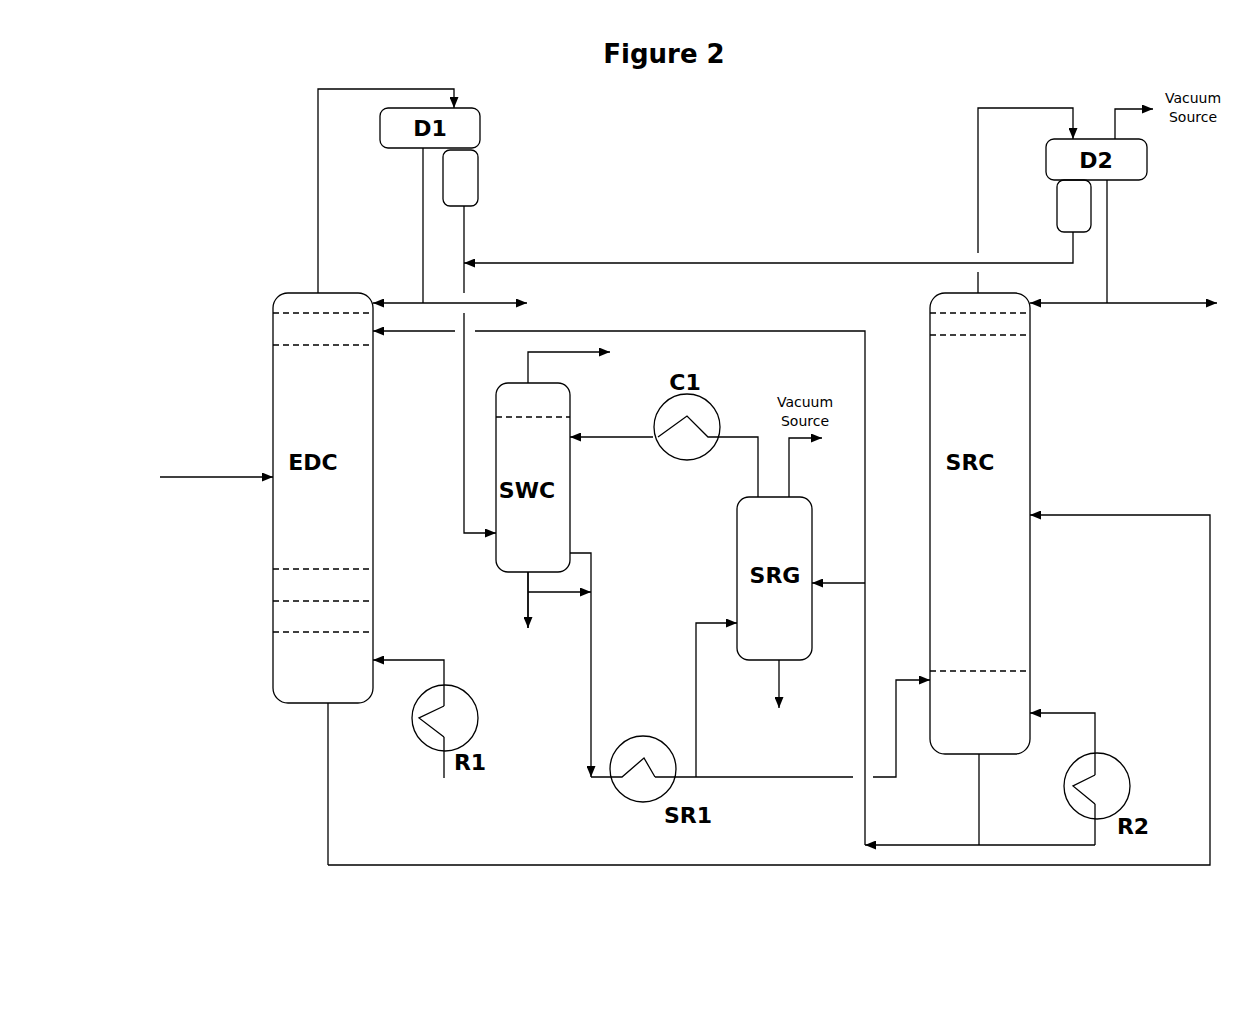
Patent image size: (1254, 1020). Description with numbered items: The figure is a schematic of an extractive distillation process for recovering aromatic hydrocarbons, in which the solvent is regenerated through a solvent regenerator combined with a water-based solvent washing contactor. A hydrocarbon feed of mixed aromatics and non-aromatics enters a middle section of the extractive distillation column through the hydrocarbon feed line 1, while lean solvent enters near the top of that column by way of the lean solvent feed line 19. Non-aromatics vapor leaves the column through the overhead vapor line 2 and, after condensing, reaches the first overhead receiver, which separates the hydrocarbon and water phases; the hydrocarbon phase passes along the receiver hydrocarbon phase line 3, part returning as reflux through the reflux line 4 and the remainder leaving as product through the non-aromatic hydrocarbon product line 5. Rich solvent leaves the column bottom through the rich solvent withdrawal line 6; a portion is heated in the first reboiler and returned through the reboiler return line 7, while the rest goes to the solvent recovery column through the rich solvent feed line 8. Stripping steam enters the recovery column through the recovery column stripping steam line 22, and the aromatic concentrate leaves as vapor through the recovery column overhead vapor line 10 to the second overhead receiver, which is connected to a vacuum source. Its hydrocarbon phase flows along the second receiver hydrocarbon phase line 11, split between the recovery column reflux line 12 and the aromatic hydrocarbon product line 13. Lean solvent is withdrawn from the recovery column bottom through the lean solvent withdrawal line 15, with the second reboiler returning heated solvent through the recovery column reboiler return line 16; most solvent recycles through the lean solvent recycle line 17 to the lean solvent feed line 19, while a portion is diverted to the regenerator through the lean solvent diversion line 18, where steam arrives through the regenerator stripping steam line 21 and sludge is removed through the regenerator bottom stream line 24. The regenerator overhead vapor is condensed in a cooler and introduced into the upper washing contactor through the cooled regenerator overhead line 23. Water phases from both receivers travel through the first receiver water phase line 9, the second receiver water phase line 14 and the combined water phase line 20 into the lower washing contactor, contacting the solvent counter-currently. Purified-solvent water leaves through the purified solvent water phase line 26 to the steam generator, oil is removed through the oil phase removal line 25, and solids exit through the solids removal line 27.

The hydrocarbon feed line 1 is at (216, 466).
The EDC overhead vapor line 2 is at (377, 191).
The D1 hydrocarbon phase line 3 is at (414, 225).
The EDC reflux line 4 is at (398, 292).
The non-aromatic hydrocarbon product line 5 is at (484, 298).
The rich solvent withdrawal line 6 is at (317, 784).
The reboiler return line 7 is at (408, 707).
The rich solvent feed line to SRC 8 is at (769, 690).
The D1 water phase line 9 is at (474, 249).
The SRC overhead vapor line 10 is at (1010, 200).
The D2 hydrocarbon phase line 11 is at (1121, 241).
The SRC reflux line 12 is at (1068, 316).
The aromatic hydrocarbon product line 13 is at (1162, 316).
The D2 water phase line 14 is at (768, 247).
The lean solvent withdrawal line 15 is at (992, 799).
The SRC reboiler return line 16 is at (1062, 769).
The lean solvent recycle line 17 is at (980, 834).
The lean solvent diversion line to SRG 18 is at (838, 572).
The lean solvent feed line to EDC 19 is at (619, 578).
The combined water phase line 20 is at (467, 423).
The SRG stripping steam line 21 is at (716, 700).
The SRC stripping steam line 22 is at (792, 728).
The cooled SRG overhead line 23 is at (611, 428).
The SRG bottom stream line 24 is at (796, 690).
The SWC oil phase removal line 25 is at (584, 363).
The SWC purified solvent water phase line 26 is at (592, 665).
The SWC solids removal line 27 is at (550, 613).